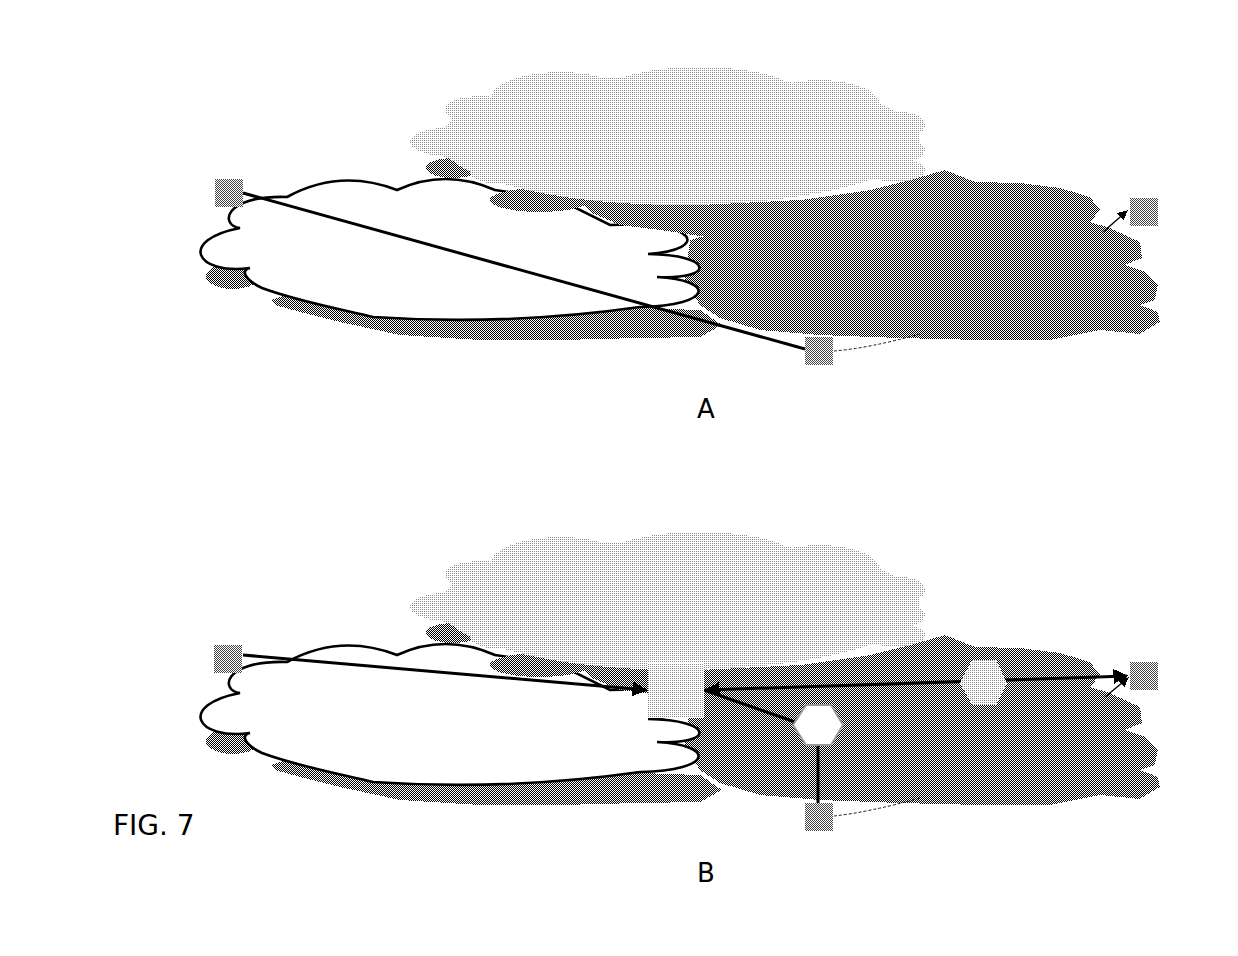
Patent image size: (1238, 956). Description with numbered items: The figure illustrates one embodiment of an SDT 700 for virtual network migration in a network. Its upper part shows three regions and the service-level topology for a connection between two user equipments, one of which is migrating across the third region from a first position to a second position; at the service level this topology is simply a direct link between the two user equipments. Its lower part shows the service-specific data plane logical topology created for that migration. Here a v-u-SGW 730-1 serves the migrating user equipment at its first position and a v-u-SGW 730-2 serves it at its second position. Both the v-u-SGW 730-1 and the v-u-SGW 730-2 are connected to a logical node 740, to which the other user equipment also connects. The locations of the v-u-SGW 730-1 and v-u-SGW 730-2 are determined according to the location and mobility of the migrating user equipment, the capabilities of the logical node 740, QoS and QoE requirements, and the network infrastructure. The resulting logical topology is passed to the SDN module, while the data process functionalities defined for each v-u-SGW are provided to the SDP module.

The SDT 700 is at (182, 98).
The v-u-SGW 730-1 is at (760, 785).
The v-u-SGW 730-2 is at (1005, 658).
The logical node 740 is at (648, 703).